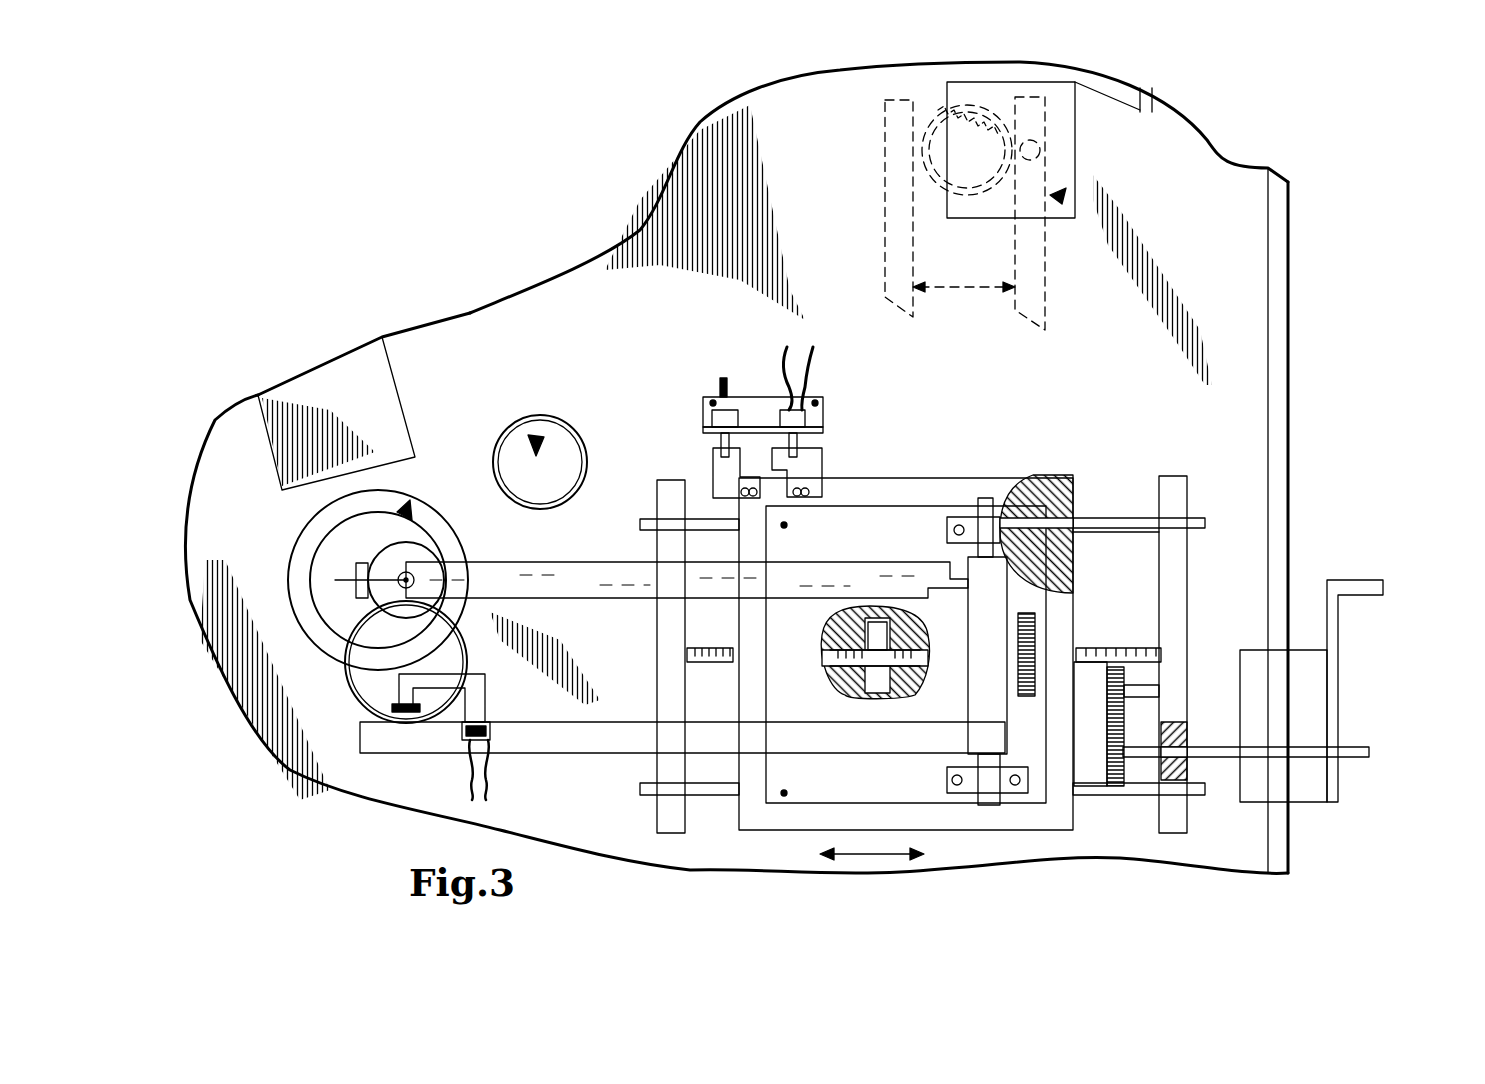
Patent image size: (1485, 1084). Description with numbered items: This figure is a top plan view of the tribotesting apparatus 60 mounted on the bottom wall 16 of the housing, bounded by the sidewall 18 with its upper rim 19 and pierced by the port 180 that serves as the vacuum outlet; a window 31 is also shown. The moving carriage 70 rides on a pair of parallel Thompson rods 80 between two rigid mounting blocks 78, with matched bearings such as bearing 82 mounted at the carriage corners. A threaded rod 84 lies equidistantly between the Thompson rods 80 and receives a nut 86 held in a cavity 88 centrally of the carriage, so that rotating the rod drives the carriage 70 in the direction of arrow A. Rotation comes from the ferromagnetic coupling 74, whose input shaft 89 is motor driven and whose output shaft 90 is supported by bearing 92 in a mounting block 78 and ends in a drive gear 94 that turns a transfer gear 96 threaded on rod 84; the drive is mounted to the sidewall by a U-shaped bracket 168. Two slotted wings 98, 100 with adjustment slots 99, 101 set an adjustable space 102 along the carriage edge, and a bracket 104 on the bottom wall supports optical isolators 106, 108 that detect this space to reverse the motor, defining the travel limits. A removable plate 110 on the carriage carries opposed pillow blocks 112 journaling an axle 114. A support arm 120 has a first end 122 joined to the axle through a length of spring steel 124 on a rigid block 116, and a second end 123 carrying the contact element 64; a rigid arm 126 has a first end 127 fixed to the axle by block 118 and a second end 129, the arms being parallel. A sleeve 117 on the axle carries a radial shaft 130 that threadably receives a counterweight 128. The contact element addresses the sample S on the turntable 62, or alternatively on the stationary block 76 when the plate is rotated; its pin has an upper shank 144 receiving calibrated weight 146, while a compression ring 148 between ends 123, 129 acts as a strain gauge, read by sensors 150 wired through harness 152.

The bottom wall 16 is at (228, 458).
The sidewall 18 is at (1290, 407).
The upper rim 19 is at (1278, 270).
The window 31 is at (366, 416).
The tribotesting apparatus 60 is at (1065, 408).
The turntable 62 is at (340, 640).
The contact element 64 is at (1066, 196).
The moving carriage 70 is at (1040, 820).
The ferromagnetic coupling 74 is at (1268, 668).
The stationary block 76 is at (1068, 170).
The mounting blocks 78 is at (1175, 496).
The Thompson rods 80 is at (1160, 520).
The bearing 82 is at (1050, 475).
The threaded rod 84 is at (1088, 648).
The nut 86 is at (866, 626).
The cavity 88 is at (855, 690).
The input shaft 89 is at (1355, 745).
The output shaft 90 is at (1220, 760).
The bearing 92 is at (1170, 780).
The drive gear 94 is at (1125, 730).
The transfer gear 96 is at (1145, 675).
The slotted wing 98 is at (713, 465).
The adjustment slot 99 is at (742, 492).
The slotted wing 100 is at (822, 456).
The adjustment slot 101 is at (815, 478).
The space 102 is at (753, 455).
The bracket 104 is at (823, 420).
The optical isolator 106 is at (706, 418).
The optical isolator 108 is at (803, 400).
The removable plate 110 is at (788, 800).
The pillow blocks 112 is at (950, 518).
The axle 114 is at (985, 498).
The rigid block 116 is at (1050, 565).
The sleeve 117 is at (975, 700).
The block 118 is at (1048, 760).
The support arm 120 is at (1045, 318).
The first end 122 is at (935, 582).
The second end 123 is at (1030, 125).
The spring steel 124 is at (935, 590).
The rigid arm 126 is at (885, 262).
The first end 127 is at (930, 735).
The counterweight 128 is at (1045, 620).
The second end 129 is at (885, 148).
The shaft 130 is at (1035, 660).
The upper shank 144 is at (420, 562).
The weight 146 is at (392, 560).
The compression ring 148 is at (360, 700).
The sensors 150 is at (400, 730).
The harness 152 is at (462, 735).
The U-shaped bracket 168 is at (1350, 580).
The port 180 is at (534, 440).
The sample S is at (330, 608).
The arrow A is at (880, 855).